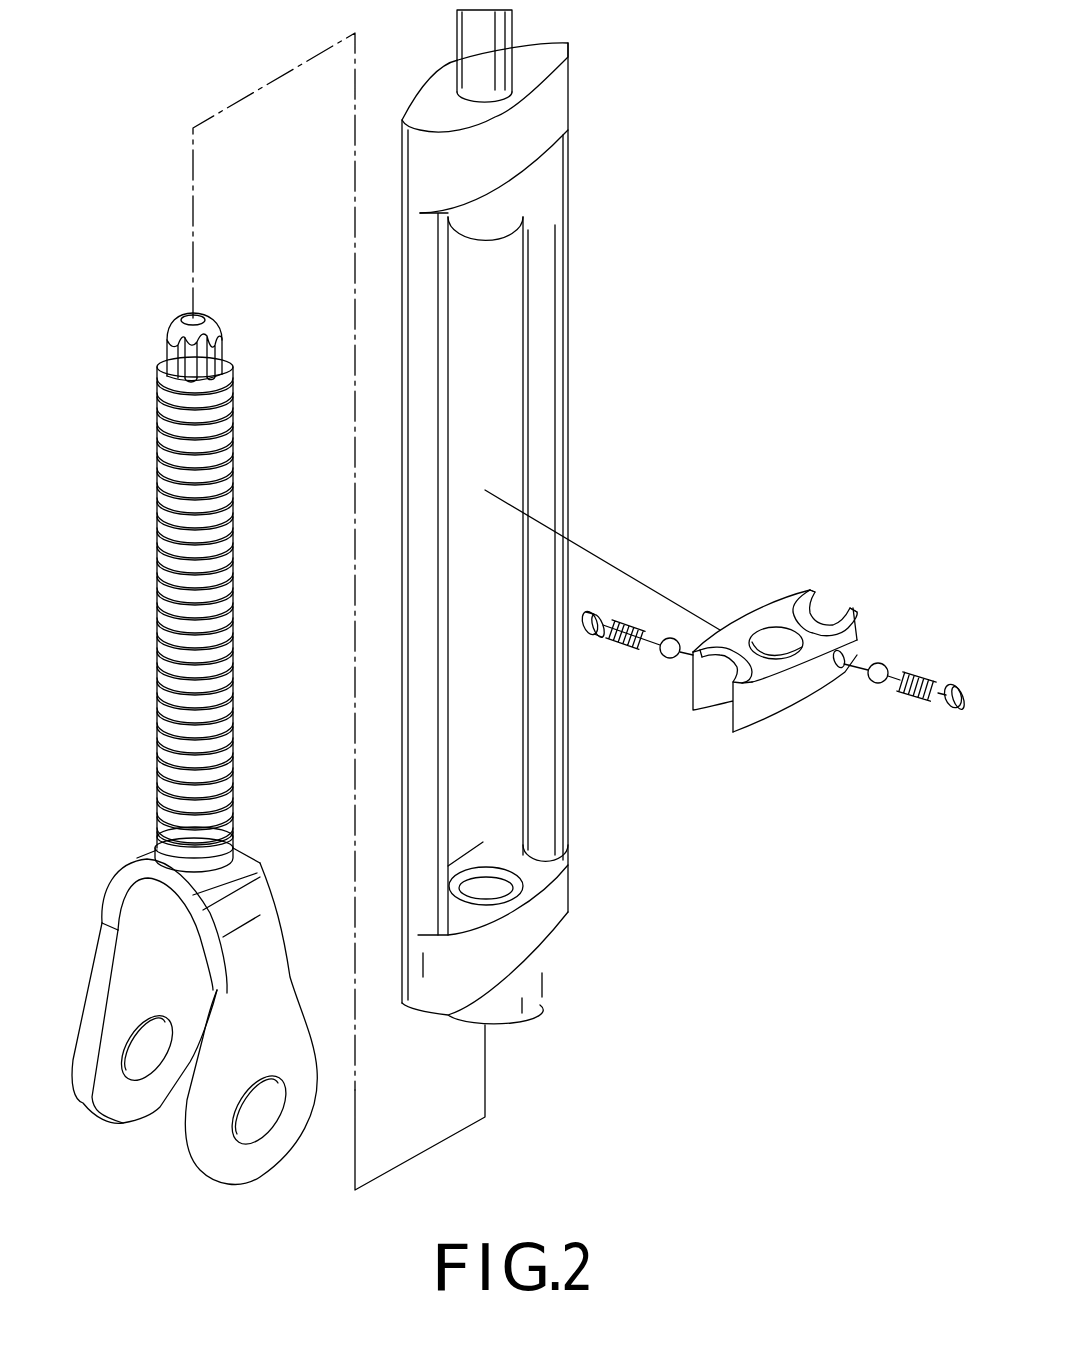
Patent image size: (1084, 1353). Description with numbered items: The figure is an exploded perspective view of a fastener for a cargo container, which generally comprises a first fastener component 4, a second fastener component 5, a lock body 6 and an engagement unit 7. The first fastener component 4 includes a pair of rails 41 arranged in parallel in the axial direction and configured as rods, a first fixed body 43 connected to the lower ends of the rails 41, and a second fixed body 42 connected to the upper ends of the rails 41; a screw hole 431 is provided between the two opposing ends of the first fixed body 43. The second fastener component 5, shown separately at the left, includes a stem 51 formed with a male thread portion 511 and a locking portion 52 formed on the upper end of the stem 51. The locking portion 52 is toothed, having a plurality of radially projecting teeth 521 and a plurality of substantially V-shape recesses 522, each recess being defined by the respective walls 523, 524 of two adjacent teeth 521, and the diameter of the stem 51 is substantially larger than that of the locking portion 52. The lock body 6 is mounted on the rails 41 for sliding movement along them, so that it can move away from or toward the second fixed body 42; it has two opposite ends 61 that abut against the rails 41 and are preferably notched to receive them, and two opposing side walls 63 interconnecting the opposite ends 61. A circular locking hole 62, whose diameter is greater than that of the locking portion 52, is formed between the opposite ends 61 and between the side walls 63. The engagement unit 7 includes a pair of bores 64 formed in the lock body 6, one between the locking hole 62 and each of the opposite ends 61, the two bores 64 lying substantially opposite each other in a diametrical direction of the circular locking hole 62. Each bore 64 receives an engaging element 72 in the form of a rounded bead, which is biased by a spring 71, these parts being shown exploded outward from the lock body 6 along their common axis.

The first fastener component 4 is at (502, 517).
The rails 41 is at (423, 432).
The second fixed body 42 is at (557, 97).
The first fixed body 43 is at (540, 933).
The screw hole 431 is at (478, 892).
The second fastener component 5 is at (184, 696).
The stem 51 is at (147, 614).
The male thread portion 511 is at (180, 520).
The locking portion 52 is at (180, 329).
The teeth 521 is at (213, 362).
The V-shape recesses 522 is at (177, 355).
The wall 523 is at (192, 385).
The wall 524 is at (168, 340).
The lock body 6 is at (761, 652).
The opposite ends 61 is at (830, 608).
The locking hole 62 is at (780, 652).
The side walls 63 is at (772, 603).
The bore 64 is at (858, 635).
The engagement unit 7 is at (772, 646).
The spring 71 is at (632, 625).
The engaging element 72 is at (670, 638).